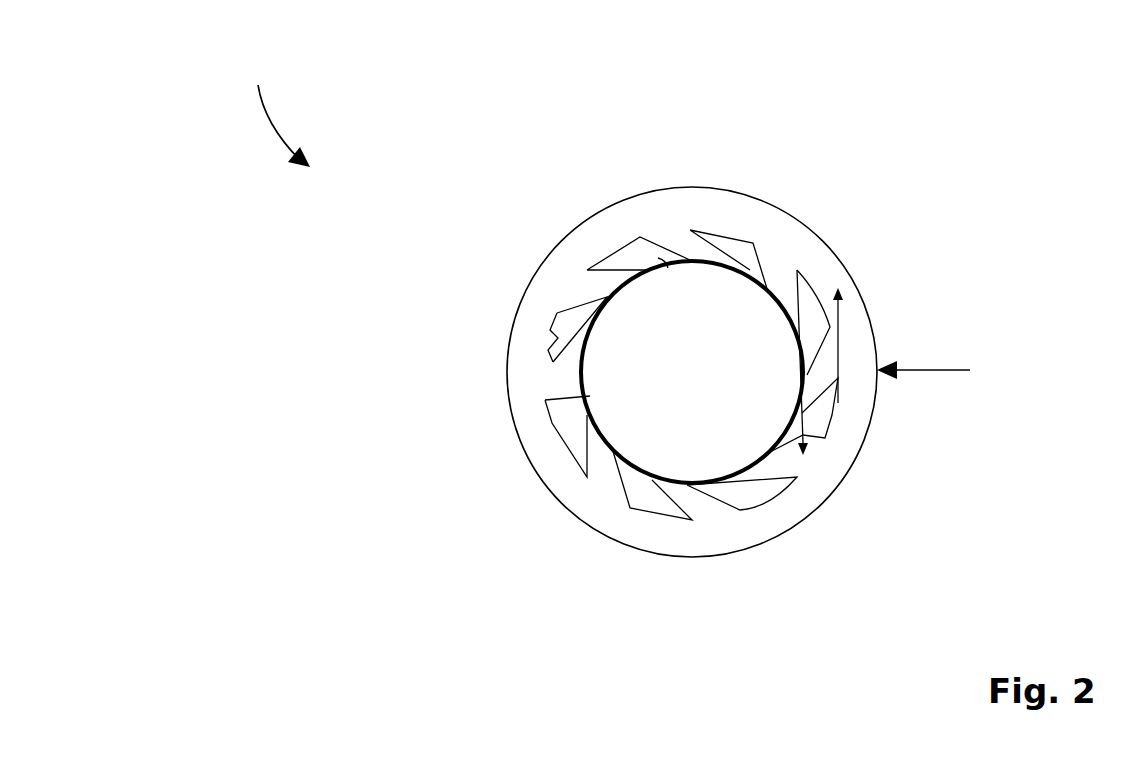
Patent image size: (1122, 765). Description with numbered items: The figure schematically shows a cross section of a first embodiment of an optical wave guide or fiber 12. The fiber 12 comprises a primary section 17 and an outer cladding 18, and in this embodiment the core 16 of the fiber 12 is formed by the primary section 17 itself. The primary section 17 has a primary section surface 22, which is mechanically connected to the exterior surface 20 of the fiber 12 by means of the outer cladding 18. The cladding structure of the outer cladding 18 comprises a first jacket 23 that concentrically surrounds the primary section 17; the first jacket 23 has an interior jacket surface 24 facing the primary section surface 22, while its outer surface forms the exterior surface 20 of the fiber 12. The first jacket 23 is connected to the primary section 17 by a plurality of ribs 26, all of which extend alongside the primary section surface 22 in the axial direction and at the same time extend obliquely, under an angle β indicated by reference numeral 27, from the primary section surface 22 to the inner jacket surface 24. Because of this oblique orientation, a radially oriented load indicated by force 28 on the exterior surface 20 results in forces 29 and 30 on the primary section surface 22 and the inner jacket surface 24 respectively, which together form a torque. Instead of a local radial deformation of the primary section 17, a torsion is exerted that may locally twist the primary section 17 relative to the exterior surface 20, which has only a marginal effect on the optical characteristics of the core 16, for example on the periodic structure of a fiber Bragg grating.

The optical wave guide 12 is at (277, 113).
The core 16 is at (767, 333).
The primary section 17 is at (672, 440).
The outer cladding 18 is at (545, 400).
The exterior surface 20 is at (632, 197).
The primary section surface 22 is at (635, 477).
The first jacket 23 is at (557, 280).
The interior jacket surface 24 is at (547, 352).
The ribs 26 is at (723, 242).
The angle β 27 is at (668, 265).
The force 28 is at (922, 372).
The force 29 is at (803, 425).
The force 30 is at (840, 333).